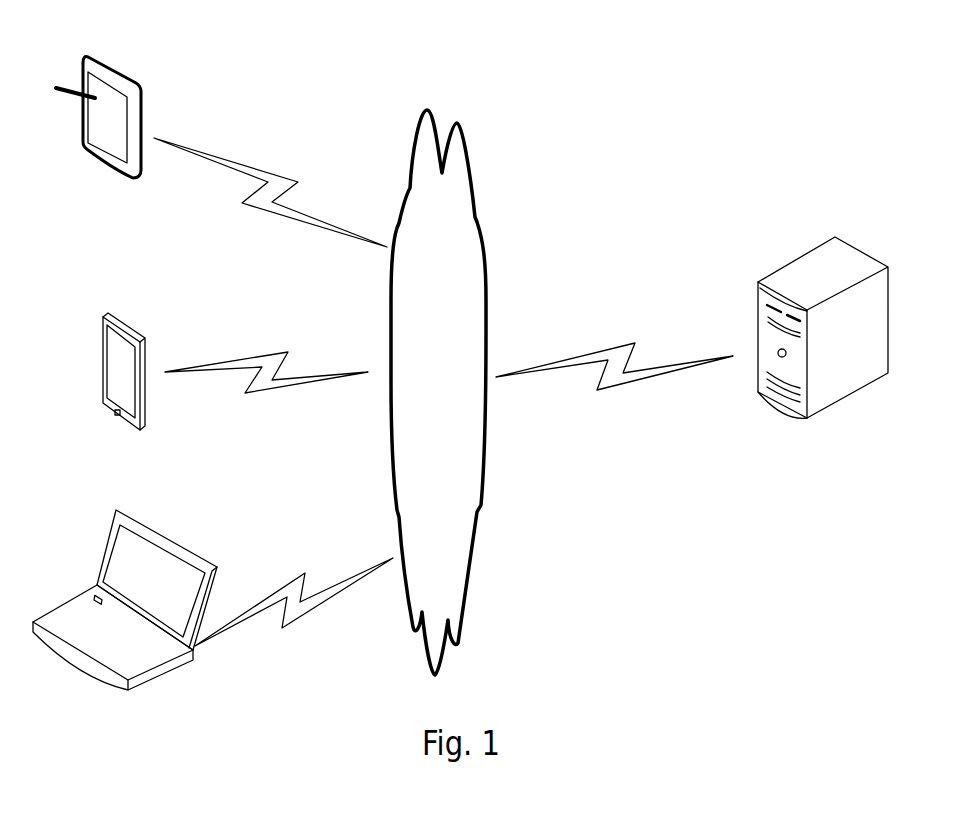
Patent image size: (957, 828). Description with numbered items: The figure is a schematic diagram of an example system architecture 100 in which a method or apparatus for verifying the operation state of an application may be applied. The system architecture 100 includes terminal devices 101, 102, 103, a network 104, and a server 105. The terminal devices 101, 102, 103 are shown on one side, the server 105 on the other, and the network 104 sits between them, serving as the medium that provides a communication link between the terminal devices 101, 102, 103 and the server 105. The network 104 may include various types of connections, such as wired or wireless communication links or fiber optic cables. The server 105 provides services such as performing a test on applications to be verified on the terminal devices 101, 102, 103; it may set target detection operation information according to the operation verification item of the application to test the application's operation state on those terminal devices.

The system architecture 100 is at (810, 45).
The terminal device 101 is at (140, 105).
The terminal device 102 is at (147, 355).
The terminal device 103 is at (160, 532).
The network 104 is at (487, 280).
The server 105 is at (768, 405).